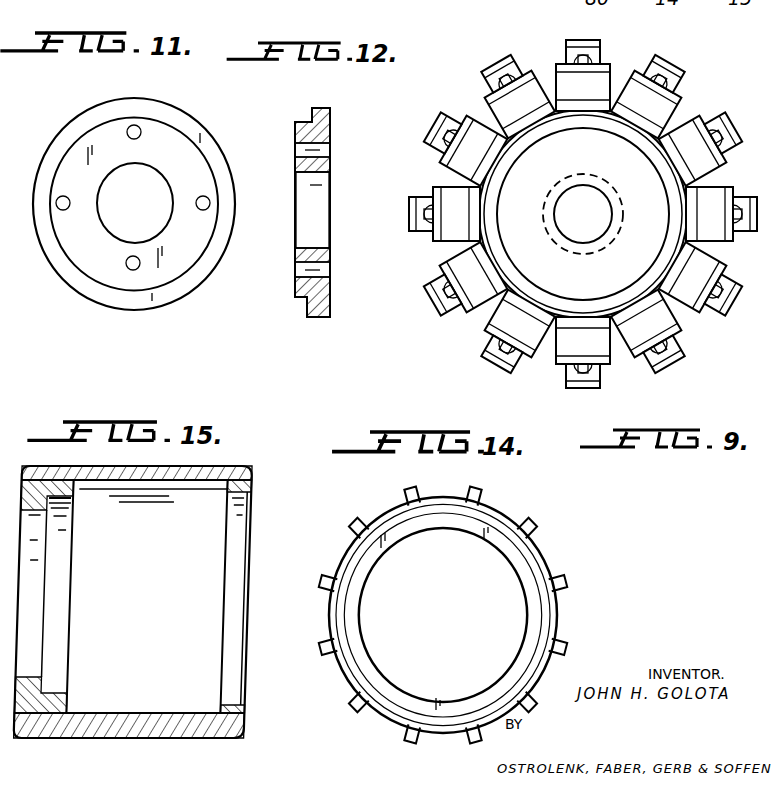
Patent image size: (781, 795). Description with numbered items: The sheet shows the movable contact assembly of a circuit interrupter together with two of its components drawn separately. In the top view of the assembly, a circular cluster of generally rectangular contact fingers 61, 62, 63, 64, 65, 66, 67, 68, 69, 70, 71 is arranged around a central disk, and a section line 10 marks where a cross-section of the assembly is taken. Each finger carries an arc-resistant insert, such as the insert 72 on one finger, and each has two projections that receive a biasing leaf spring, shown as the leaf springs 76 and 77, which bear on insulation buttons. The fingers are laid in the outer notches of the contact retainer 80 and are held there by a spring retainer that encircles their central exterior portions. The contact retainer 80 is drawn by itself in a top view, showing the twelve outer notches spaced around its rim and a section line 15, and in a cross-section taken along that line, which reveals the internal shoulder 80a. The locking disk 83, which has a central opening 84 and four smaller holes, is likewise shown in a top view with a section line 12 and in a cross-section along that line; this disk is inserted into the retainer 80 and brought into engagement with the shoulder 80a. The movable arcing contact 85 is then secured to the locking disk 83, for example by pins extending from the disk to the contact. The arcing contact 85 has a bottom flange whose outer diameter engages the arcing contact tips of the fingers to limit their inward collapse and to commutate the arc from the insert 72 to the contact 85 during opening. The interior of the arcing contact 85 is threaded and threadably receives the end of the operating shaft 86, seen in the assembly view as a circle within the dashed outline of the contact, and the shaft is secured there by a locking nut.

In FIG. 9, the section line 10— 10 is at (584, 36).
In FIG. 9, the contact finger 61 is at (670, 118).
In FIG. 9, the contact finger 62 is at (708, 172).
In FIG. 9, the contact finger 63 is at (707, 248).
In FIG. 9, the contact finger 64 is at (713, 262).
In FIG. 9, the contact finger 65 is at (676, 312).
In FIG. 9, the contact finger 66 is at (603, 357).
In FIG. 9, the contact finger 67 is at (487, 317).
In FIG. 9, the contact finger 68 is at (448, 254).
In FIG. 9, the contact finger 69 is at (445, 190).
In FIG. 9, the contact finger 70 is at (478, 100).
In FIG. 9, the contact finger 71 is at (541, 86).
In FIG. 9, the arc-resistant insert 72 is at (606, 84).
In FIG. 9, the leaf spring 76 is at (600, 48).
In FIG. 9, the leaf spring 77 is at (595, 393).
In FIG. 15, the contact retainer 80 is at (257, 522).
In FIG. 14, the contact retainer 80 is at (562, 548).
In FIG. 15, the shoulder 80a is at (72, 505).
In FIG. 11, the locking disk 83 is at (54, 144).
In FIG. 12, the locking disk 83 is at (330, 128).
In FIG. 11, the central opening 84 is at (100, 183).
In FIG. 12, the central opening 84 is at (316, 172).
In FIG. 9, the movable arcing contact 85 is at (590, 159).
In FIG. 9, the operating shaft 86 is at (575, 252).
In FIG. 11, the section line 12— 12 is at (133, 94).
In FIG. 14, the section line 15— 15 is at (447, 497).